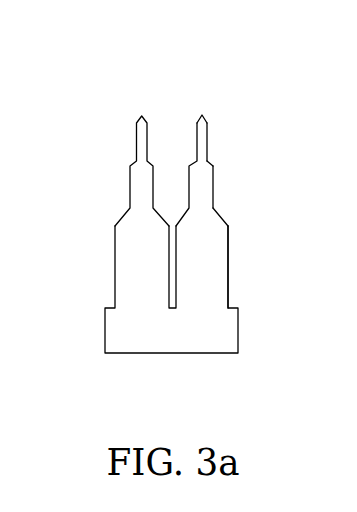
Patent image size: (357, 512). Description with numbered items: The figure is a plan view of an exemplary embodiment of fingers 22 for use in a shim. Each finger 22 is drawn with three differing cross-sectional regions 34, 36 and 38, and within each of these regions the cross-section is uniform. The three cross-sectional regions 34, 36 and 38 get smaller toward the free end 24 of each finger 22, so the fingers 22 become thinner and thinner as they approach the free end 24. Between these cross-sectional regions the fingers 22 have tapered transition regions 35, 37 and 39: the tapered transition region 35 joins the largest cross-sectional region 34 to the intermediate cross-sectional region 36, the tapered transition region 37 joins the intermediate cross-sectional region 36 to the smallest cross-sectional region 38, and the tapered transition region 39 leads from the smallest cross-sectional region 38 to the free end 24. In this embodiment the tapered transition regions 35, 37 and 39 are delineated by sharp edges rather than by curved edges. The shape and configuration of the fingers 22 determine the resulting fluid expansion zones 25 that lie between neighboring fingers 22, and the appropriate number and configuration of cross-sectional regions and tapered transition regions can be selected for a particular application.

The finger 22 is at (175, 186).
The free end 24 is at (142, 115).
The fluid expansion zone 25 is at (237, 163).
The cross-sectional region 34 is at (228, 273).
The tapered transition region 35 is at (223, 220).
The cross-sectional region 36 is at (214, 188).
The tapered transition region 37 is at (214, 166).
The cross-sectional region 38 is at (208, 142).
The tapered transition region 39 is at (206, 120).